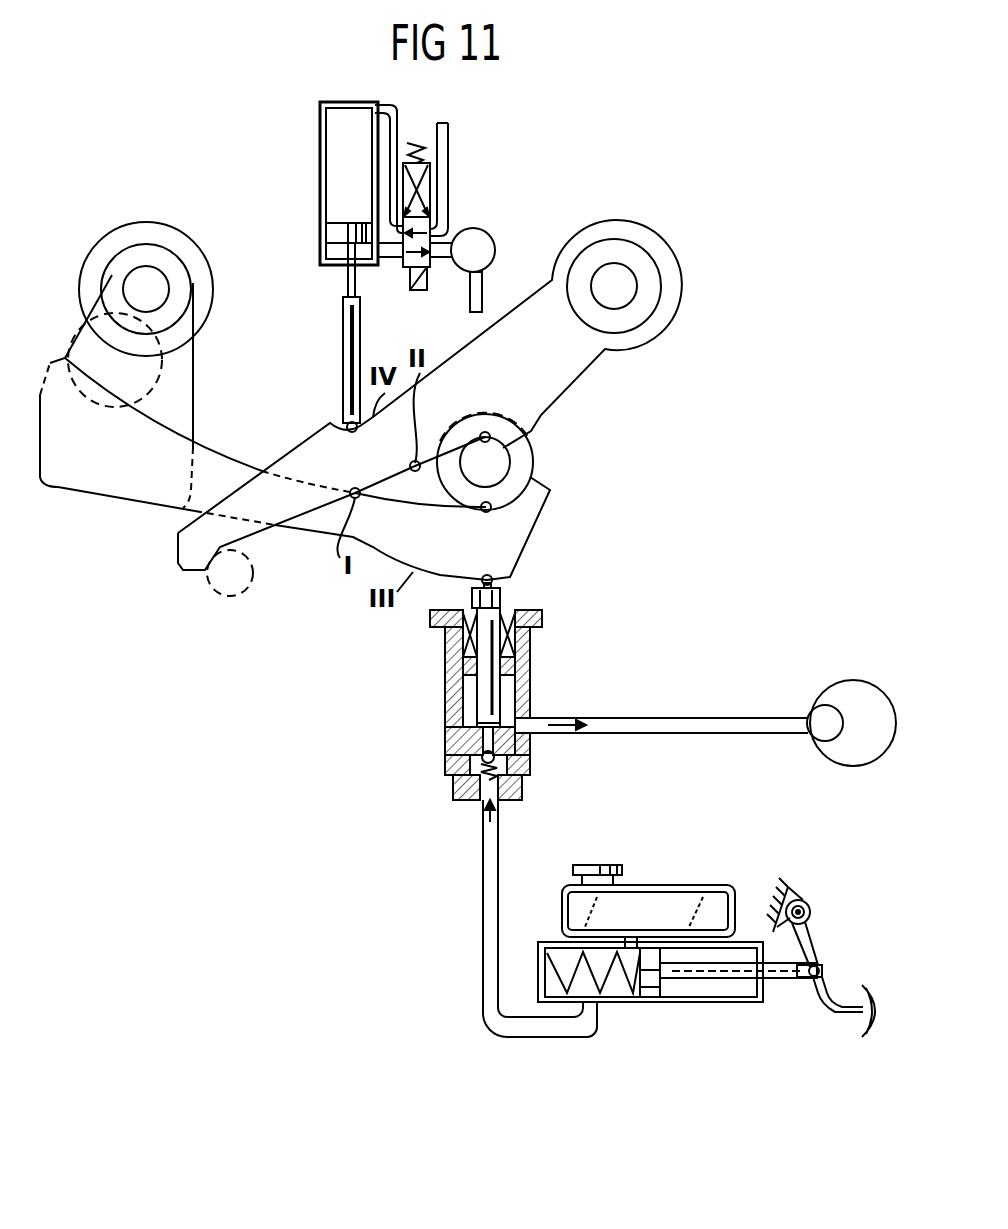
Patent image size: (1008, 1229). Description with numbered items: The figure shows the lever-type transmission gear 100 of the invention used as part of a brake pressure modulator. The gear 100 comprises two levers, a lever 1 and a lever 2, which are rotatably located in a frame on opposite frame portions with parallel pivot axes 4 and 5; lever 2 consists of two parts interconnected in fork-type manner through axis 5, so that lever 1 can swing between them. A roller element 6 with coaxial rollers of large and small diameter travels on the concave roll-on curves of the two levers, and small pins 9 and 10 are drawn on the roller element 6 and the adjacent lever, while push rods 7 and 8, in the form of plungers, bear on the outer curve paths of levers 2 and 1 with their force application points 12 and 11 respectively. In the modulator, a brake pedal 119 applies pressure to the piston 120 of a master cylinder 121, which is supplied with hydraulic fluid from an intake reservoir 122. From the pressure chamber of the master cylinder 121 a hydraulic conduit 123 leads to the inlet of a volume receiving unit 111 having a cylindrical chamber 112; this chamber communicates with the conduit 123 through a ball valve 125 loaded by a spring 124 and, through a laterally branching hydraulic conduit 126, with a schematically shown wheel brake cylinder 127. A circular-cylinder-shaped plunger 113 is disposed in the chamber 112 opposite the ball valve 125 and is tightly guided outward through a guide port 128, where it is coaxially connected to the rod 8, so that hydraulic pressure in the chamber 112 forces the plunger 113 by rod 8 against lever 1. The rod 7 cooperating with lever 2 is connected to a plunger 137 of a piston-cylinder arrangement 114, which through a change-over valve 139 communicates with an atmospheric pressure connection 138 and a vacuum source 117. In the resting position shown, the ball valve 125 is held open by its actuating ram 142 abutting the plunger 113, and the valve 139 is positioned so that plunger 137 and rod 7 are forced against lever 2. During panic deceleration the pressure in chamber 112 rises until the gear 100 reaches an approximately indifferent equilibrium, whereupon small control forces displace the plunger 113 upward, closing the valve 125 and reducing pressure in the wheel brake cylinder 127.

The lever 1 is at (133, 487).
The lever 2 is at (583, 355).
The pivot axis 4 is at (138, 277).
The pivot axis 5 is at (620, 282).
The roller element 6 is at (523, 468).
The push rod 7 is at (362, 338).
The push rod 8 is at (500, 597).
The pin 9 is at (490, 508).
The pin 10 is at (485, 432).
The force application point 11 is at (490, 577).
The force application point 12 is at (332, 432).
The lever-type gear 100 is at (582, 415).
The volume receiving unit 111 is at (502, 689).
The cylindrical chamber 112 is at (470, 683).
The plunger 113 is at (492, 702).
The piston-cylinder arrangement 114 is at (320, 190).
The vacuum source 117 is at (482, 247).
The brake pedal 119 is at (852, 1020).
The piston 120 is at (650, 1002).
The master cylinder 121 is at (678, 1006).
The intake reservoir 122 is at (678, 900).
The hydraulic conduit 123 is at (483, 866).
The spring 124 is at (467, 775).
The ball valve 125 is at (483, 752).
The hydraulic conduit 126 is at (670, 730).
The wheel brake cylinder 127 is at (832, 722).
The guide port 128 is at (465, 642).
The plunger 137 is at (347, 278).
The atmospheric pressure connection 138 is at (448, 133).
The change-over valve 139 is at (425, 170).
The actuating ram 142 is at (482, 727).